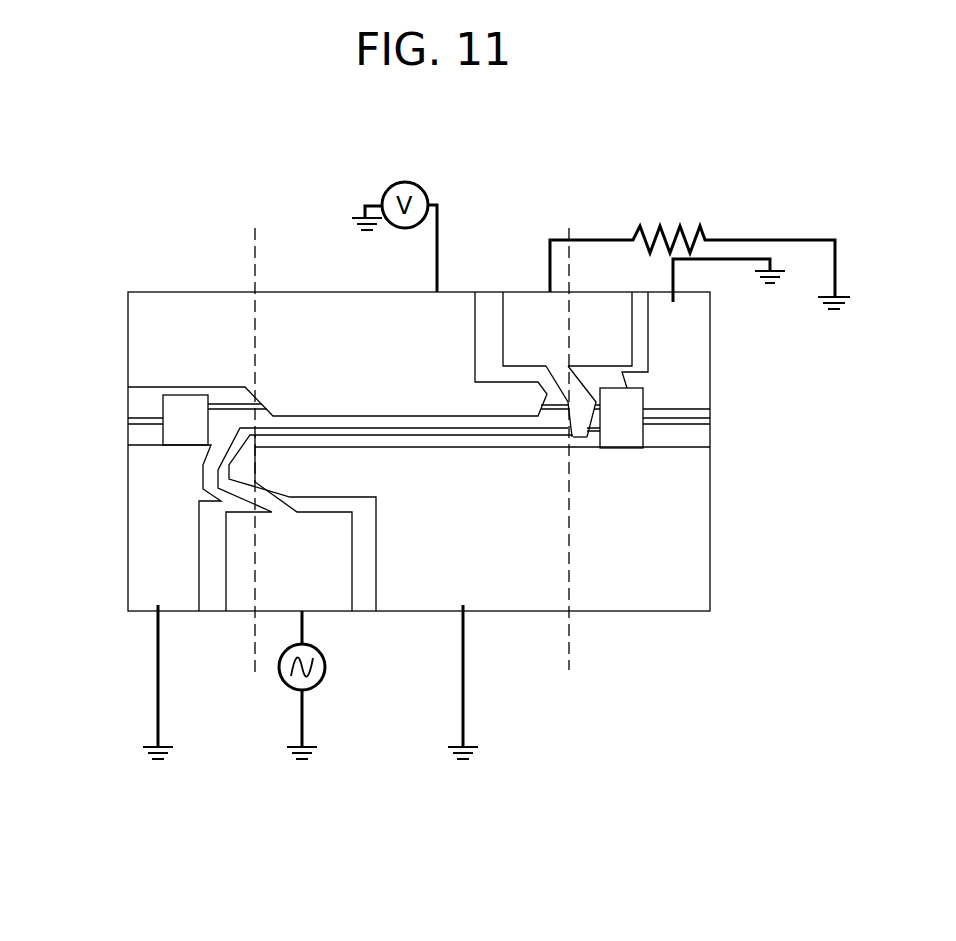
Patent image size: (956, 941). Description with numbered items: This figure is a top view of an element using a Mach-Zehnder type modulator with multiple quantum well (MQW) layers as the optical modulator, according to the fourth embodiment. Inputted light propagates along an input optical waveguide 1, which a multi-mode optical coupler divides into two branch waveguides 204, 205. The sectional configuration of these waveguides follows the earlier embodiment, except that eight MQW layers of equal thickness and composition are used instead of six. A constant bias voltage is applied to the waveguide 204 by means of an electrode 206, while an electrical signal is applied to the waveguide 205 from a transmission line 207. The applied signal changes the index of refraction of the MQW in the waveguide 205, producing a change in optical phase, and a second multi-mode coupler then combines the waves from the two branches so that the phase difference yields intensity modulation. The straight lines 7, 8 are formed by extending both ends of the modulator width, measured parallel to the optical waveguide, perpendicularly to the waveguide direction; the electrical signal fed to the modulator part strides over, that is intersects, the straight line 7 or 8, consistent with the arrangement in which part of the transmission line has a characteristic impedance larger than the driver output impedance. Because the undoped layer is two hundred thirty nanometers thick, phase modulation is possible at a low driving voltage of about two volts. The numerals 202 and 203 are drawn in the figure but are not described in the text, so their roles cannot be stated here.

The optical waveguide 1 is at (147, 417).
The straight line 7 is at (259, 440).
The straight line 8 is at (569, 438).
The input terminal electrode 202 is at (168, 392).
The output terminal electrode 203 is at (623, 432).
The waveguide 204 is at (222, 408).
The waveguide 205 is at (220, 445).
The electrode 206 is at (300, 332).
The transmission line 207 is at (528, 432).